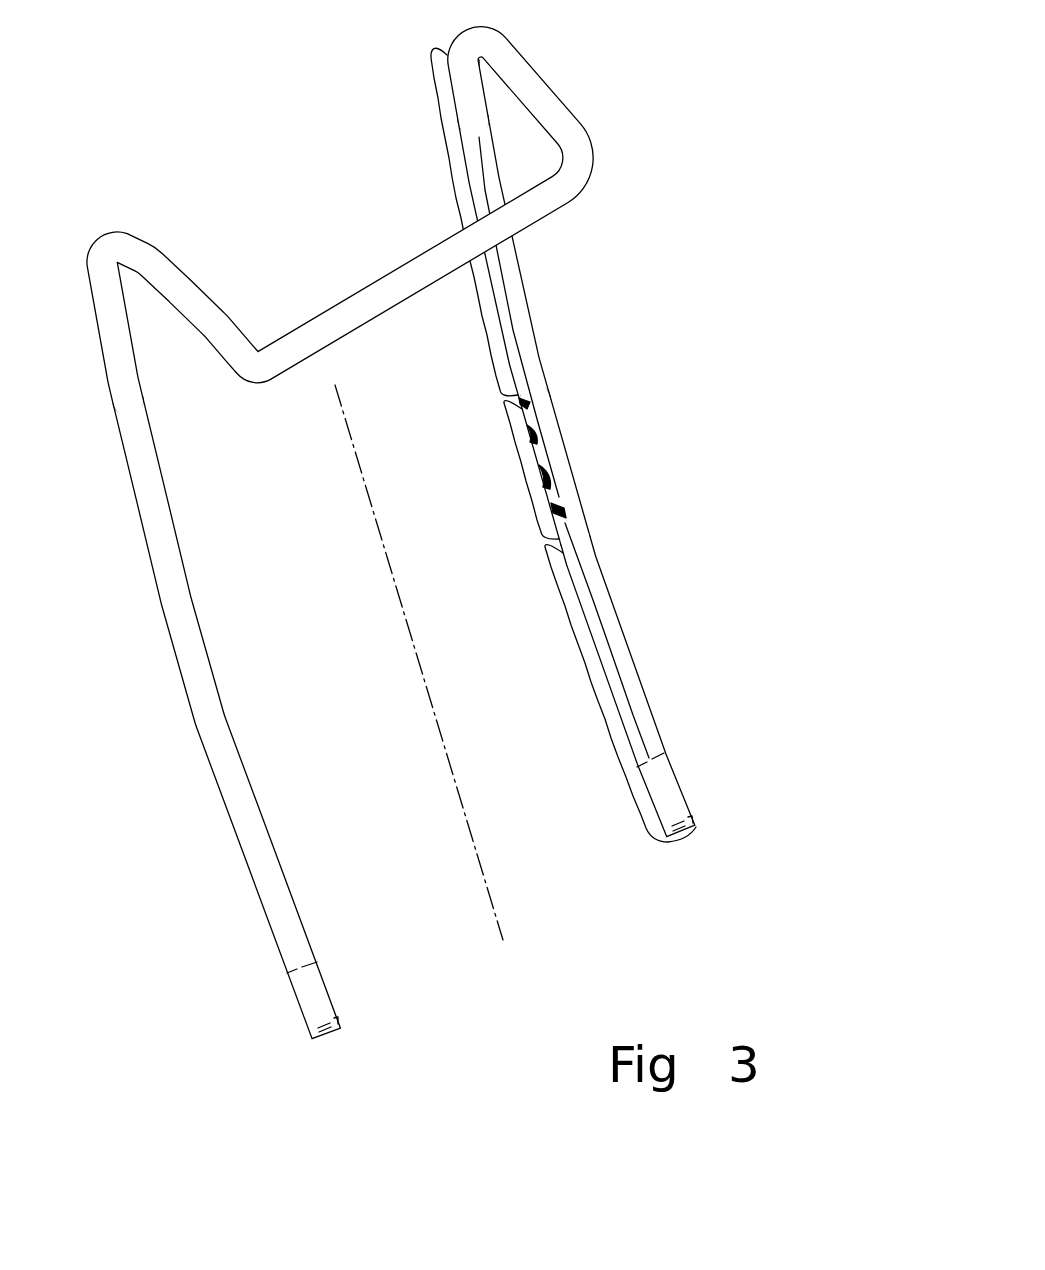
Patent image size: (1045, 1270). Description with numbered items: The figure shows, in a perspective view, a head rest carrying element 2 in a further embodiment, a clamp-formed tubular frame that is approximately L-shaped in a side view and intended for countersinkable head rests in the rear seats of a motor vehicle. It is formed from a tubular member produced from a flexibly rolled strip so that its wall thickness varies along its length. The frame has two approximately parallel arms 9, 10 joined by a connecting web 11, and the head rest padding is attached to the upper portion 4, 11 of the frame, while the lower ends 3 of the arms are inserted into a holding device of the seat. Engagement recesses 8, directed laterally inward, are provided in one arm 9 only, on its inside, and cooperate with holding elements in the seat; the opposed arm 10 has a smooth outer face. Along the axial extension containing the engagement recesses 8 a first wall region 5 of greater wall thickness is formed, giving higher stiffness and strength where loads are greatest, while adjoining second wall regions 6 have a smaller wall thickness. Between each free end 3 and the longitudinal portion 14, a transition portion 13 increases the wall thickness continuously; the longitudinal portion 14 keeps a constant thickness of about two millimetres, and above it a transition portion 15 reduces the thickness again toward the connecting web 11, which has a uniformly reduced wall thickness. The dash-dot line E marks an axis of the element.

The head rest carrying element 2 is at (442, 519).
The lower end 3 is at (698, 830).
The upper portion 4 is at (479, 124).
The first wall region 5 is at (561, 434).
The second wall region 6 is at (637, 667).
The engagement recesses 8 is at (541, 488).
The arm 9 is at (532, 327).
The arm 10 is at (211, 766).
The connecting web 11 is at (383, 276).
The transition portion 13 is at (589, 688).
The longitudinal portion 14 is at (512, 462).
The transition portion 15 is at (454, 212).
The axis plane E is at (474, 838).